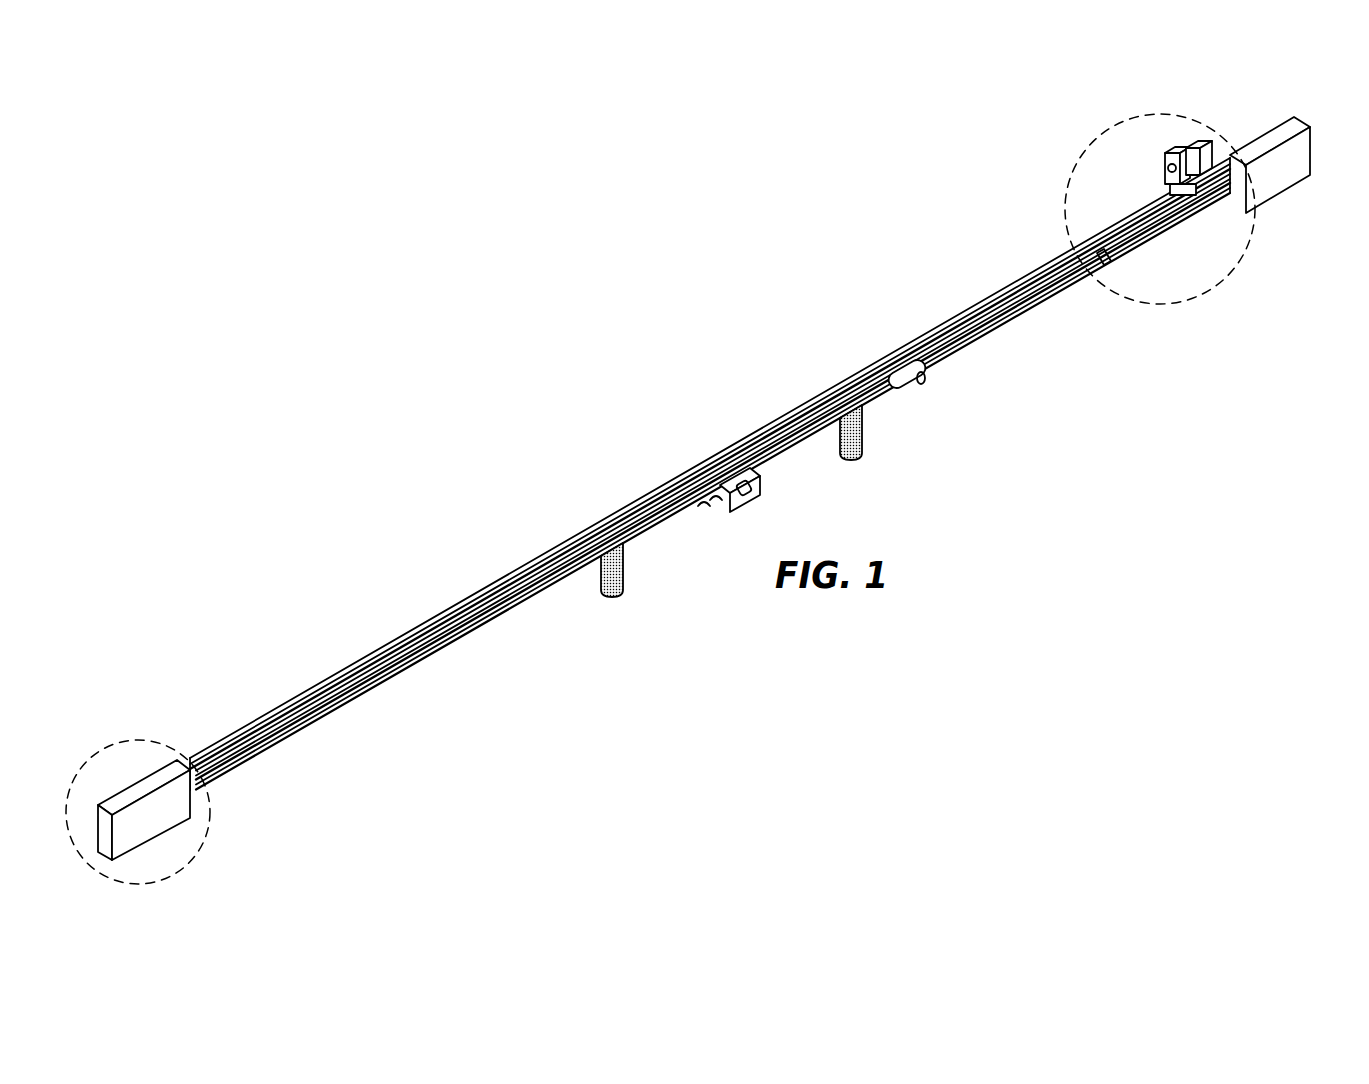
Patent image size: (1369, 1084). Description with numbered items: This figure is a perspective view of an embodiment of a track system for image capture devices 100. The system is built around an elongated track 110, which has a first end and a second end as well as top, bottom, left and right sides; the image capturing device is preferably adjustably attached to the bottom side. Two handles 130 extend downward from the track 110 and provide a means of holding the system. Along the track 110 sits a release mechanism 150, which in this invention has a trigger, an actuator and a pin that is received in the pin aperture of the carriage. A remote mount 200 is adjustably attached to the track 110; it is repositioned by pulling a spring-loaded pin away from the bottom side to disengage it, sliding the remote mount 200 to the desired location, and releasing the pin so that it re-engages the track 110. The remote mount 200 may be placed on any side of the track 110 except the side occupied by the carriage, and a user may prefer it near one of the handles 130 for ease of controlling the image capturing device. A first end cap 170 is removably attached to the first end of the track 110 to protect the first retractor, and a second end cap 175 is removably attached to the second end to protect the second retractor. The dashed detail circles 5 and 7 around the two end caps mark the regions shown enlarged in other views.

The track system for image capture devices 100 is at (342, 185).
The track 110 is at (537, 570).
The handle 130 is at (613, 597).
The release mechanism 150 is at (895, 357).
The first end cap 170 is at (165, 808).
The second end cap 175 is at (1273, 182).
The remote mount 200 is at (753, 485).
The detail circle FIG. 5 is at (137, 740).
The detail circle FIG. 7 is at (1158, 304).